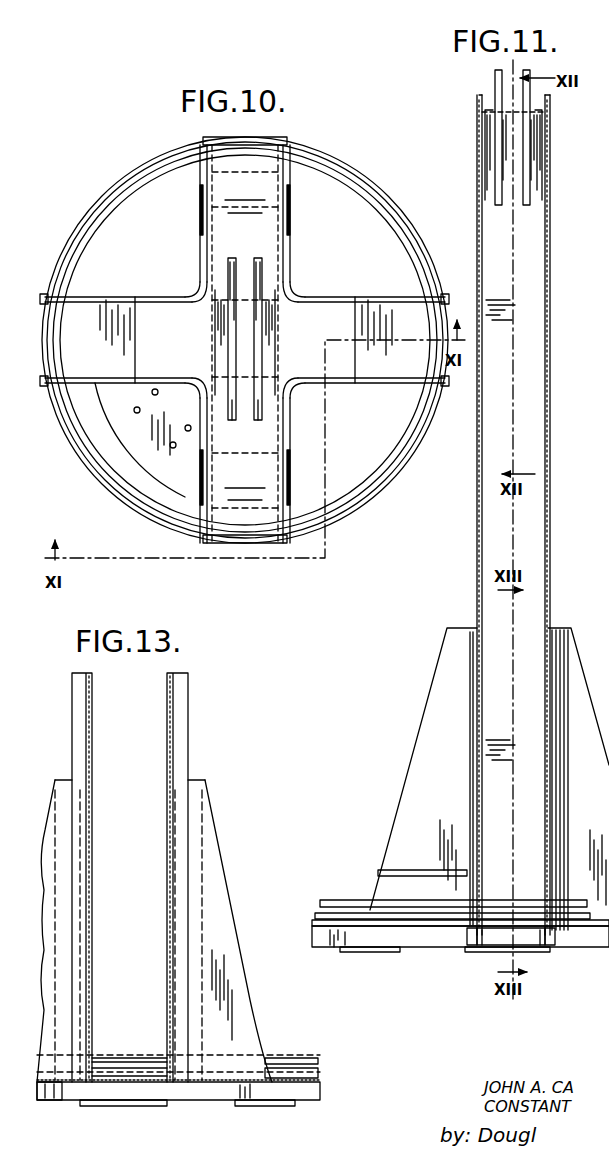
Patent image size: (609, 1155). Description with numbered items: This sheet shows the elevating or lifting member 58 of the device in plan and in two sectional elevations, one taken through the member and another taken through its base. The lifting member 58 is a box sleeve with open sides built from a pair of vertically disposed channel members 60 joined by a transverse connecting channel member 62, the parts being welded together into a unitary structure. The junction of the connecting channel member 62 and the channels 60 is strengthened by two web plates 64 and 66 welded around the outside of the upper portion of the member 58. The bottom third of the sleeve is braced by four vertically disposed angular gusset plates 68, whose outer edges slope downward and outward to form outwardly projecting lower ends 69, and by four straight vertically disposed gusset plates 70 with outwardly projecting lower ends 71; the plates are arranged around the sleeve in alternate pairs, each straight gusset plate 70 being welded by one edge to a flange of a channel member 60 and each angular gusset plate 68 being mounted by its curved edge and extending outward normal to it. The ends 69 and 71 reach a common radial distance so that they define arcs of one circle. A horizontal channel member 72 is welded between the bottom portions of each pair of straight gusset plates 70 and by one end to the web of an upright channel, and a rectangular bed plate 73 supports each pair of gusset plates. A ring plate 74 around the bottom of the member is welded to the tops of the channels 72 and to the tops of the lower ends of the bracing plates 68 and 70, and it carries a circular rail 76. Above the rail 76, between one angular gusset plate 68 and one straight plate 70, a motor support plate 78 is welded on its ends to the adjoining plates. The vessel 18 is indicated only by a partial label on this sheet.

In FIG. 11, the vessel 18 is at (603, 315).
In FIG. 10, the elevating or lifting member 58 is at (345, 157).
In FIG. 11, the elevating or lifting member 58 is at (602, 283).
In FIG. 11, the vertically disposed channel member 60 is at (535, 250).
In FIG. 13, the vertically disposed channel member 60 is at (167, 745).
In FIG. 10, the transverse connecting channel member 62 is at (270, 318).
In FIG. 11, the transverse connecting channel member 62 is at (487, 108).
In FIG. 10, the web plate 64 is at (230, 262).
In FIG. 11, the web plate 64 is at (500, 150).
In FIG. 10, the web plate 66 is at (260, 262).
In FIG. 11, the web plate 66 is at (525, 152).
In FIG. 10, the angular gusset plate 68 is at (150, 297).
In FIG. 11, the angular gusset plate 68 is at (400, 765).
In FIG. 10, the outwardly projecting lower end 69 is at (443, 294).
In FIG. 11, the outwardly projecting lower end 69 is at (318, 935).
In FIG. 10, the straight gusset plate 70 is at (205, 232).
In FIG. 11, the straight gusset plate 70 is at (480, 797).
In FIG. 13, the straight gusset plate 70 is at (60, 878).
In FIG. 10, the outwardly projecting lower end 71 is at (205, 139).
In FIG. 11, the outwardly projecting lower end 71 is at (470, 940).
In FIG. 13, the outwardly projecting lower end 71 is at (320, 1090).
In FIG. 10, the horizontal channel member 72 is at (245, 336).
In FIG. 11, the horizontal channel member 72 is at (500, 928).
In FIG. 13, the horizontal channel member 72 is at (45, 1100).
In FIG. 10, the rectangular bed plate 73 is at (200, 195).
In FIG. 11, the rectangular bed plate 73 is at (372, 951).
In FIG. 13, the rectangular bed plate 73 is at (125, 1106).
In FIG. 10, the ring plate 74 is at (400, 212).
In FIG. 11, the ring plate 74 is at (315, 916).
In FIG. 13, the ring plate 74 is at (318, 1075).
In FIG. 10, the circular rail 76 is at (372, 178).
In FIG. 11, the circular rail 76 is at (356, 900).
In FIG. 13, the circular rail 76 is at (305, 1058).
In FIG. 10, the motor support plate 78 is at (145, 435).
In FIG. 11, the motor support plate 78 is at (395, 870).